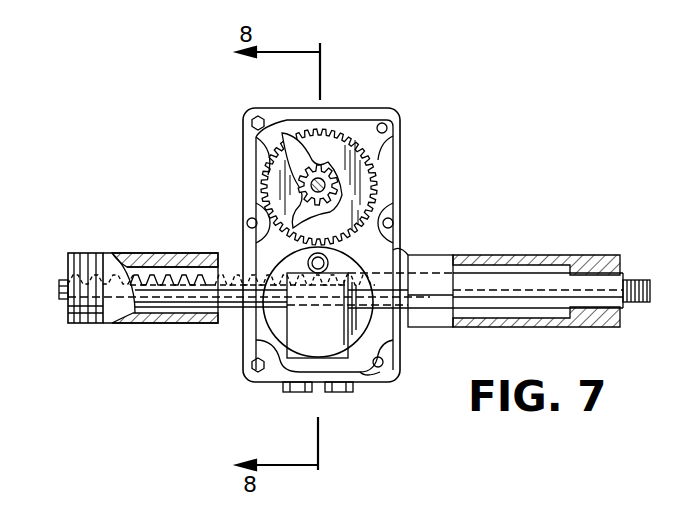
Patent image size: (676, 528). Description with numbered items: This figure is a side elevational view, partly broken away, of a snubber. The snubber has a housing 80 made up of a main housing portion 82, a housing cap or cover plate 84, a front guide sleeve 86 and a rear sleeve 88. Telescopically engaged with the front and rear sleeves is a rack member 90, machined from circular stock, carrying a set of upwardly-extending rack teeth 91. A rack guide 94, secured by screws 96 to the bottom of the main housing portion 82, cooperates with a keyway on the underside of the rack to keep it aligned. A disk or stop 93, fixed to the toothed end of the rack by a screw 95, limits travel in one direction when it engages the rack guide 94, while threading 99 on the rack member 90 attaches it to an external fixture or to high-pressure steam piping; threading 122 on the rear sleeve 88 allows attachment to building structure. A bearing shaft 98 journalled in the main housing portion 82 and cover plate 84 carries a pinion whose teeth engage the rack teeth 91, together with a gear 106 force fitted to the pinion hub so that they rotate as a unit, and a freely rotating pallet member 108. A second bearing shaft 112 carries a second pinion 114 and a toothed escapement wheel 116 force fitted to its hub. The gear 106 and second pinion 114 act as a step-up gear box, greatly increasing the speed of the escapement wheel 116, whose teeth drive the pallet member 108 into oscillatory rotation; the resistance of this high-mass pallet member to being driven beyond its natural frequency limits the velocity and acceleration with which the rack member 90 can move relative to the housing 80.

The housing 80 is at (406, 182).
The main housing portion 82 is at (395, 365).
The housing cap or cover plate 84 is at (250, 140).
The front guide sleeve 86 is at (435, 256).
The rear sleeve 88 is at (128, 323).
The rack member 90 is at (612, 265).
The rack teeth 91 is at (160, 273).
The disk or stop 93 is at (78, 262).
The rack guide 94 is at (370, 372).
The screw 95 is at (59, 289).
The screws 96 is at (330, 393).
The bearing shaft 98 is at (270, 262).
The threading 99 is at (630, 303).
The gear 106 is at (393, 247).
The pallet member 108 is at (398, 342).
The second bearing shaft 112 is at (340, 190).
The second pinion 114 is at (300, 185).
The toothed escapement wheel 116 is at (328, 128).
The threading 122 is at (96, 323).